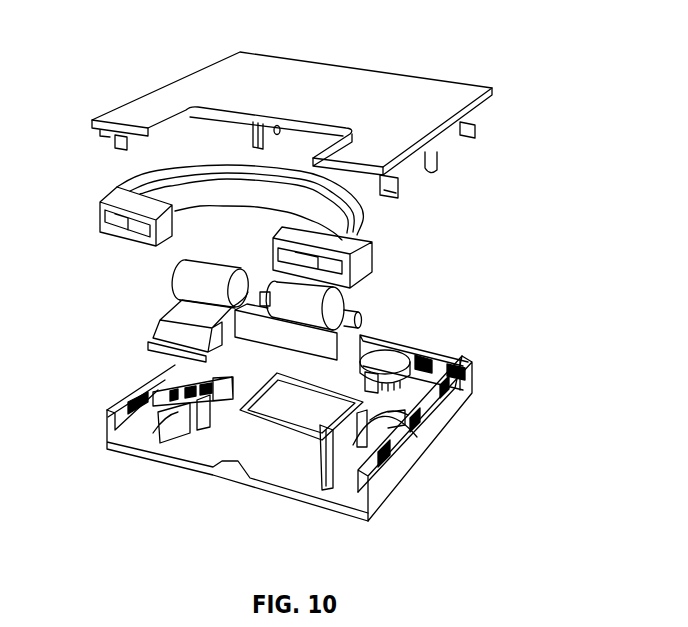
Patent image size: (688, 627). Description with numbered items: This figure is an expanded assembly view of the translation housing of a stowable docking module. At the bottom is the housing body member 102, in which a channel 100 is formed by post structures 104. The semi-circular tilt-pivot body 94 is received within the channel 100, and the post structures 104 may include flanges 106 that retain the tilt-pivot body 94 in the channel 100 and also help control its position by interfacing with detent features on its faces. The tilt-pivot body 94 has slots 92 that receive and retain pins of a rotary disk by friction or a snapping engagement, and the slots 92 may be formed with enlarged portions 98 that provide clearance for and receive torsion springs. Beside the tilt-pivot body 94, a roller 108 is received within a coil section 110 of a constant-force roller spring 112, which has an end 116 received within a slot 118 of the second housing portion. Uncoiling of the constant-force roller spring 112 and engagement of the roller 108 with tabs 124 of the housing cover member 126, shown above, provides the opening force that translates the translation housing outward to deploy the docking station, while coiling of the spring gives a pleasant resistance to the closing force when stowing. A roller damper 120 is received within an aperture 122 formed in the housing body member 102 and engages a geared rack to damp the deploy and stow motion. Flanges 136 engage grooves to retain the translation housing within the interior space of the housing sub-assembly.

The housing cover member 126 is at (468, 90).
The tabs 124 is at (253, 135).
The tilt-pivot body 94 is at (105, 193).
The slots 92 is at (98, 231).
The enlarged portions 98 is at (138, 233).
The coil section 110 is at (200, 268).
The constant-force roller spring 112 is at (182, 315).
The end 116 is at (147, 348).
The roller 108 is at (335, 301).
The slot 118 is at (300, 400).
The housing body member 102 is at (338, 497).
The flanges 136 is at (477, 382).
The aperture 122 is at (412, 443).
The post structures 104 is at (393, 462).
The flanges 106 is at (212, 405).
The channel 100 is at (322, 458).
The roller damper 120 is at (390, 355).